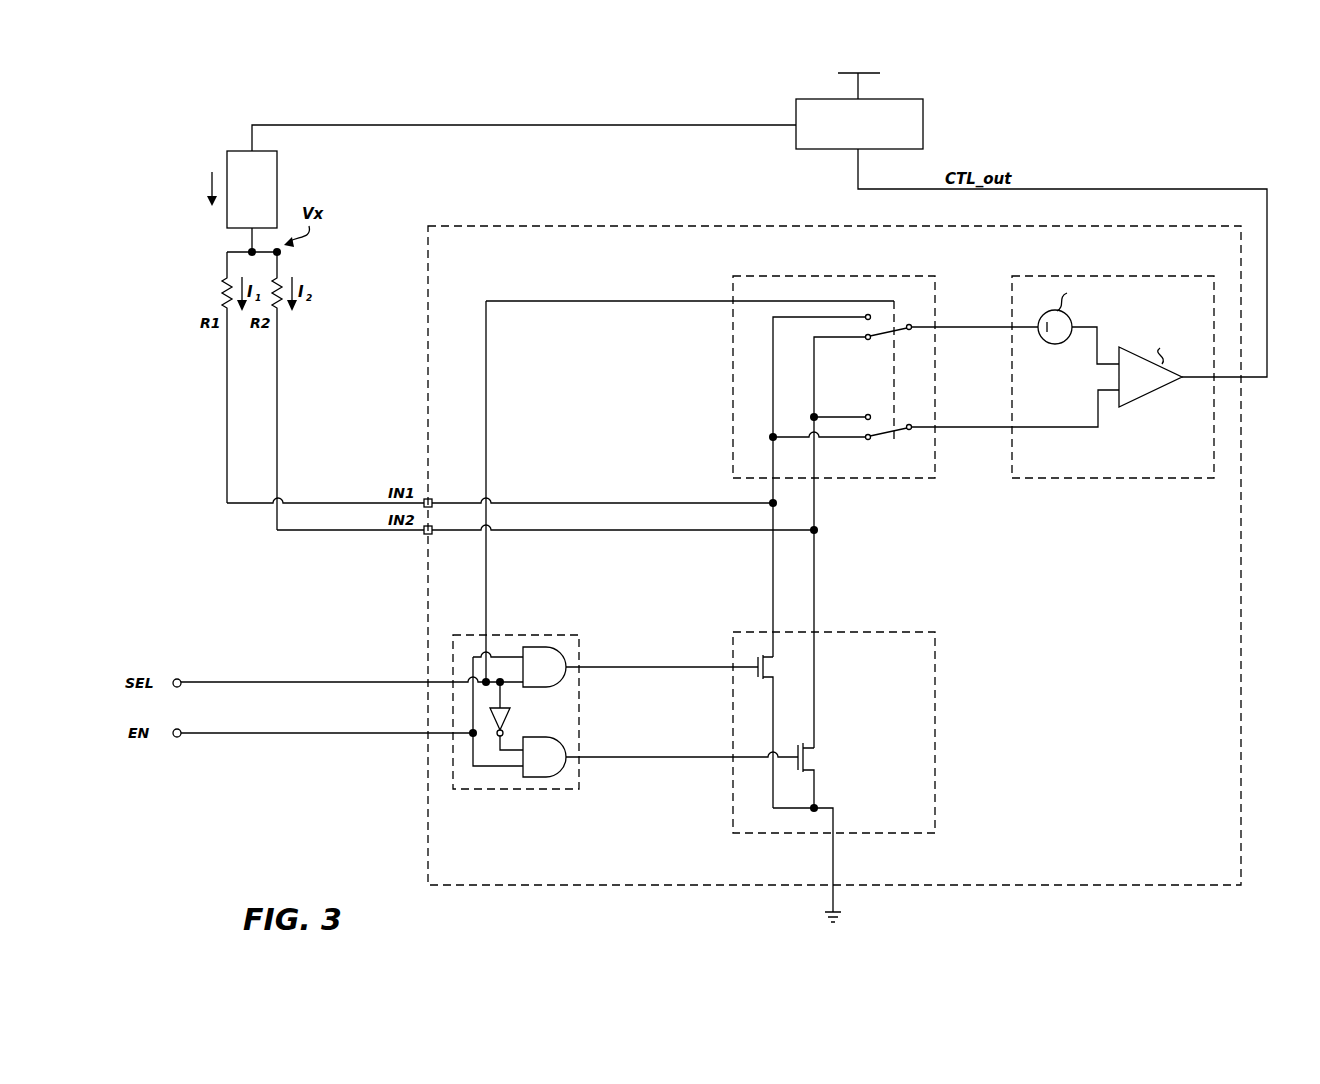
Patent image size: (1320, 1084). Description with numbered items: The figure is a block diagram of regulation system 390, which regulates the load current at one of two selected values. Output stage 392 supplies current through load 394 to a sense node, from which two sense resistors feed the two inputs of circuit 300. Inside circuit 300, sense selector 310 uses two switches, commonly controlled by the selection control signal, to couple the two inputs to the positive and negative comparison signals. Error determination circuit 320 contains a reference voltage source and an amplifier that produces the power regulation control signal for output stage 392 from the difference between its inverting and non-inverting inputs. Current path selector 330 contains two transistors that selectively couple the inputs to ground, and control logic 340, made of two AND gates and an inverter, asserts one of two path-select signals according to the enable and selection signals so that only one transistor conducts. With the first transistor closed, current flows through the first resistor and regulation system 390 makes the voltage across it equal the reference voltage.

The circuit 300 is at (607, 227).
The sense selector 310 is at (832, 276).
The error determination circuit 320 is at (1113, 276).
The current path selector 330 is at (936, 734).
The control logic 340 is at (541, 636).
The regulation system 390 is at (1092, 150).
The output stage 392 is at (924, 124).
The load 394 is at (278, 190).